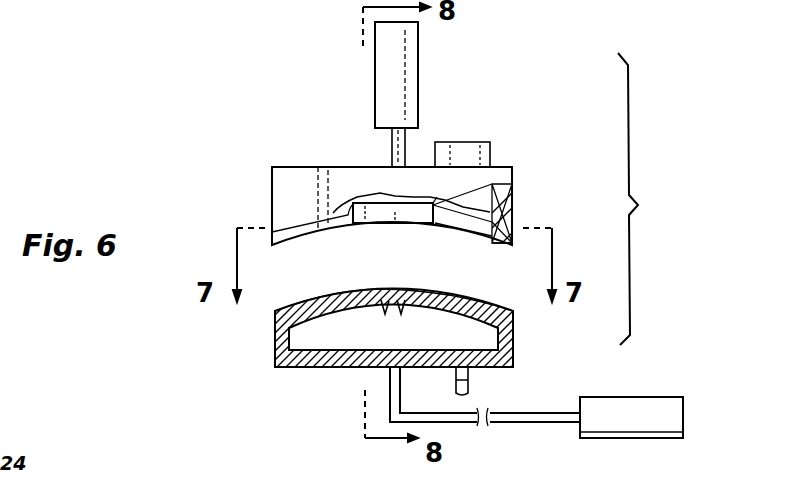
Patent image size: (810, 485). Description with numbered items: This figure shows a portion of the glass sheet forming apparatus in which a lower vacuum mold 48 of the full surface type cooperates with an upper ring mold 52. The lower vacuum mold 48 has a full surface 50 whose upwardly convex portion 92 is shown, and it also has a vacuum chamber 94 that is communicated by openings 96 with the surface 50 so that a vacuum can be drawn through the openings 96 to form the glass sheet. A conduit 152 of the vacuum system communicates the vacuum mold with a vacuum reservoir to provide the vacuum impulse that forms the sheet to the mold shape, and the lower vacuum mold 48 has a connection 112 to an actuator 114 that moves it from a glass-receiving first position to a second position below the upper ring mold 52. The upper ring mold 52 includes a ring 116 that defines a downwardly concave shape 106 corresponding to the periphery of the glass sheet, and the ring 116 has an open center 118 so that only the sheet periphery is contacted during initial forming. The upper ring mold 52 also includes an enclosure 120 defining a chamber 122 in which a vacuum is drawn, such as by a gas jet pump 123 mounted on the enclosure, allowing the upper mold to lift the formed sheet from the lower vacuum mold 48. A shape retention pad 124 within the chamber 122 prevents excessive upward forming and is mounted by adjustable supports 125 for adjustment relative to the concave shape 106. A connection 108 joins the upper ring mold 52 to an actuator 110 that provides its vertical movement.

The upper ring mold 52 is at (258, 196).
The lower vacuum mold 48 is at (258, 337).
The actuator 110 is at (418, 50).
The connection 108 is at (390, 140).
The gas jet pump 123 is at (441, 140).
The shape retention pad 124 is at (437, 197).
The adjustable supports 125 is at (403, 197).
The enclosure 120 is at (305, 165).
The chamber 122 is at (463, 207).
The open center 118 is at (510, 183).
The ring 116 is at (512, 207).
The downwardly concave shape 106 is at (385, 230).
The upwardly convex portion 92 is at (308, 300).
The full surface 50 is at (428, 290).
The openings 96 is at (390, 320).
The vacuum chamber 94 is at (483, 333).
The conduit 152 is at (472, 378).
The connection 112 is at (500, 425).
The actuator 114 is at (626, 422).